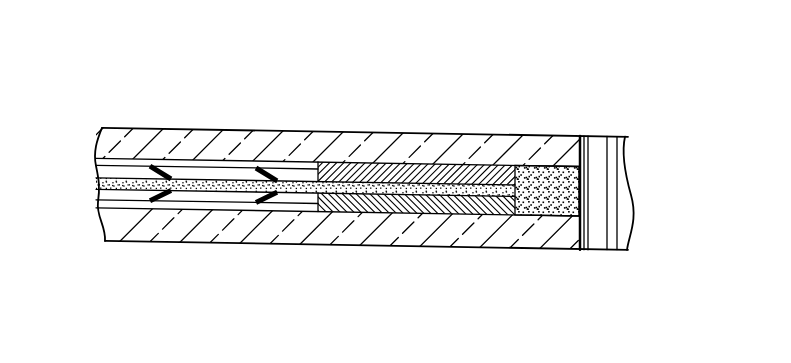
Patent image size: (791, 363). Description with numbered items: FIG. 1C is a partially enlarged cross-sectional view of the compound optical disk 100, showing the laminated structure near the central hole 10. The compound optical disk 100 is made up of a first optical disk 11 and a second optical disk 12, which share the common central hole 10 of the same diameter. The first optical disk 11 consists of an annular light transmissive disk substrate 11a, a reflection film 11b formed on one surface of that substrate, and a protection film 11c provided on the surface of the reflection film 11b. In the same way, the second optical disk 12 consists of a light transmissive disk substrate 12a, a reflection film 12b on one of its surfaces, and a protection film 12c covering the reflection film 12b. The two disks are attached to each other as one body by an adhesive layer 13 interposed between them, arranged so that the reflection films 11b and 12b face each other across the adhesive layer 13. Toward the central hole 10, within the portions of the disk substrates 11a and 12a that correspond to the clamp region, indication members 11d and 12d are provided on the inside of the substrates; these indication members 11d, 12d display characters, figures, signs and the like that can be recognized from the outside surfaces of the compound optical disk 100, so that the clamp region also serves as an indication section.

The compound optical disk 100 is at (642, 92).
The central hole 10 is at (624, 157).
The first optical disk 11 is at (75, 118).
The light transmissive disk substrate 11a is at (117, 140).
The reflection film 11b is at (155, 165).
The protection film 11c is at (221, 172).
The indication member 11d is at (387, 170).
The second optical disk 12 is at (75, 192).
The light transmissive disk substrate 12a is at (115, 245).
The reflection film 12b is at (147, 207).
The protection film 12c is at (227, 197).
The indication member 12d is at (353, 207).
The adhesive layer 13 is at (281, 186).